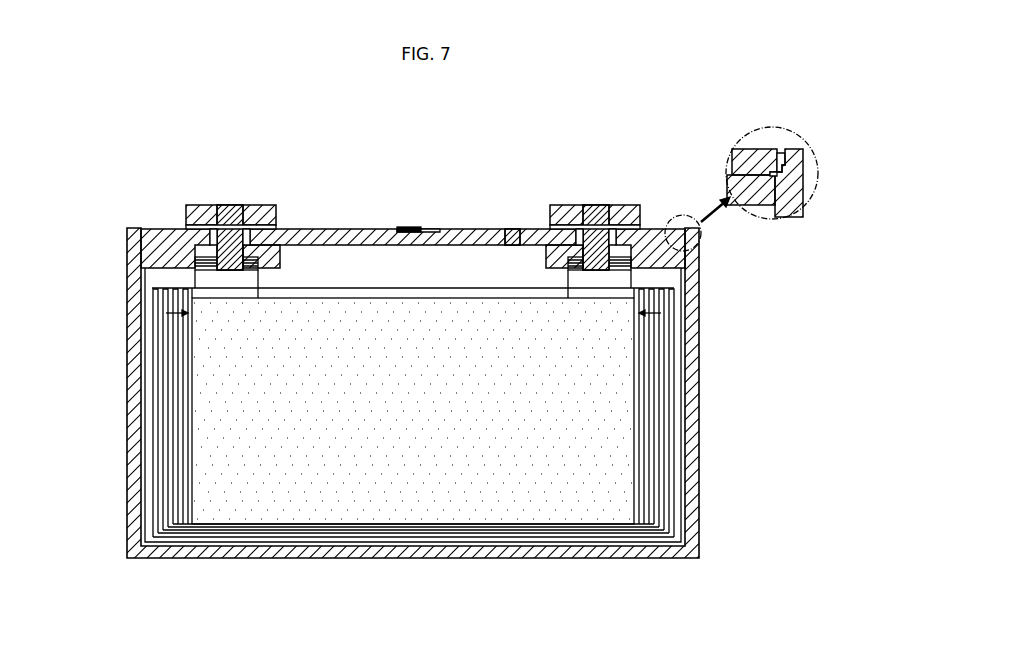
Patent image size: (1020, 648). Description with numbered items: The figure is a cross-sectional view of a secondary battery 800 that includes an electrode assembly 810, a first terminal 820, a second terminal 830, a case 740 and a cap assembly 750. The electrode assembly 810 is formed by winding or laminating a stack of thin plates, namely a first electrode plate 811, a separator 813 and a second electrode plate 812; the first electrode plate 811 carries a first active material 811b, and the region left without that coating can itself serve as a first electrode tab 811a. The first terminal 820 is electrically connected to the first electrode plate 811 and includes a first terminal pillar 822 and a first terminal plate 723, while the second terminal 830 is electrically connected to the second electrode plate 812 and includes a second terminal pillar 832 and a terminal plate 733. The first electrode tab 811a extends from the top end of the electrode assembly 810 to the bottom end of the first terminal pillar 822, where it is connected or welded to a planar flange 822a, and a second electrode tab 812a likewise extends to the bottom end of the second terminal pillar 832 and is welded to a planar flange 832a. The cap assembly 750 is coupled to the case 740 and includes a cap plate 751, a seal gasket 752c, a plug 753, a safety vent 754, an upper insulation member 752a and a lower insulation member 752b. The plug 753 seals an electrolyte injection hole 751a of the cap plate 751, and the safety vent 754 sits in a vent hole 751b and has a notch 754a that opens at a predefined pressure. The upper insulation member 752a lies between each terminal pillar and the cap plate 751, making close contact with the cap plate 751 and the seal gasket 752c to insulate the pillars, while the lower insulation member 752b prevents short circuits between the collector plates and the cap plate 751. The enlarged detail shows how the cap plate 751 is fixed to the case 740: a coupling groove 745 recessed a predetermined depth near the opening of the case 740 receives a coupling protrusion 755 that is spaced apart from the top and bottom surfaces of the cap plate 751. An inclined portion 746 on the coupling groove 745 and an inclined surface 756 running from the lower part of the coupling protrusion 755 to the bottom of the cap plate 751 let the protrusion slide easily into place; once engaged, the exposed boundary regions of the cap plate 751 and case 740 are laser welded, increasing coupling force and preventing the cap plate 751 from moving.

The secondary battery 800 is at (91, 100).
The electrode assembly 810 is at (418, 433).
The first electrode plate 811 is at (165, 316).
The first electrode tab 811a is at (215, 280).
The first active material 811b is at (327, 510).
The second electrode plate 812 is at (663, 314).
The second electrode tab 812a is at (625, 278).
The separator 813 is at (383, 532).
The first terminal 820 is at (510, 361).
The first terminal pillar 822 is at (220, 205).
The planar flange 822a is at (283, 250).
The first terminal plate 723 is at (241, 205).
The second terminal 830 is at (510, 361).
The second terminal pillar 832 is at (581, 205).
The planar flange 832a is at (553, 250).
The second terminal plate 733 is at (608, 205).
The case 740 is at (697, 350).
The coupling groove 745 is at (792, 165).
The inclined portion 746 is at (770, 148).
The cap assembly 750 is at (510, 352).
The cap plate 751 is at (510, 352).
The electrolyte injection hole 751a is at (500, 246).
The vent hole 751b is at (413, 246).
The upper insulation member 752a is at (285, 226).
The lower insulation member 752b is at (152, 255).
The seal gasket 752c is at (268, 238).
The plug 753 is at (512, 227).
The safety vent 754 is at (418, 207).
The notch 754a is at (410, 227).
The coupling protrusion 755 is at (786, 158).
The inclined surface 756 is at (747, 193).